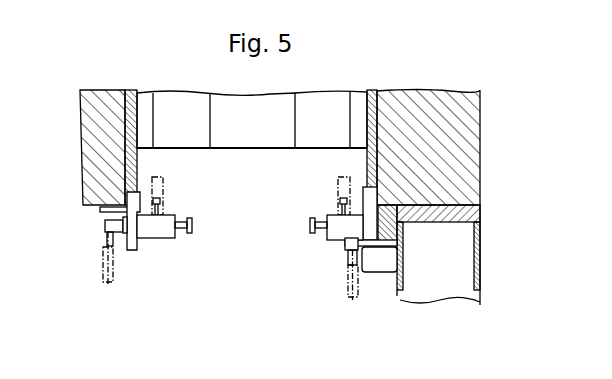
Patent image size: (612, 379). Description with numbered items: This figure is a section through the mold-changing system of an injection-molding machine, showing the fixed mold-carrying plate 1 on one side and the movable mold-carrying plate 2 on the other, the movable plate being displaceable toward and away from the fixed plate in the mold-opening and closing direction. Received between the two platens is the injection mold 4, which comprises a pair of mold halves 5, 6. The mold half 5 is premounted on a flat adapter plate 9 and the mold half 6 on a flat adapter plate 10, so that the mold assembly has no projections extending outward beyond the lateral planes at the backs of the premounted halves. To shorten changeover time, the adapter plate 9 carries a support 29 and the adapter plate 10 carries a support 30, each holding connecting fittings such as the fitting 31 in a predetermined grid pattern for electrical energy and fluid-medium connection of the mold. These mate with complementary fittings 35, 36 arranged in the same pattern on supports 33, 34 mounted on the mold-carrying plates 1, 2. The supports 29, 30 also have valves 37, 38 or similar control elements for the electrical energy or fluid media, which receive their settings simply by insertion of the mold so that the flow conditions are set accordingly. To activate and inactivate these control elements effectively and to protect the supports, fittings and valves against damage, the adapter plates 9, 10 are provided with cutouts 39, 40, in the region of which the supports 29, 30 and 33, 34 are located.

The fixed mold-carrying plate 1 is at (423, 107).
The movable mold-carrying plate 2 is at (100, 125).
The injection mold 4 is at (258, 150).
The mold half 5 is at (353, 103).
The mold half 6 is at (233, 103).
The adapter plate 9 is at (370, 98).
The adapter plate 10 is at (130, 90).
The support 29 is at (333, 225).
The support 30 is at (165, 228).
The connecting fitting 31 is at (343, 240).
The support 33 is at (381, 243).
The support 34 is at (122, 212).
The complementary fitting 35 is at (350, 255).
The complementary fitting 36 is at (112, 225).
The valve 37 is at (320, 215).
The valve 38 is at (182, 215).
The cutout 39 is at (377, 203).
The cutout 40 is at (137, 213).